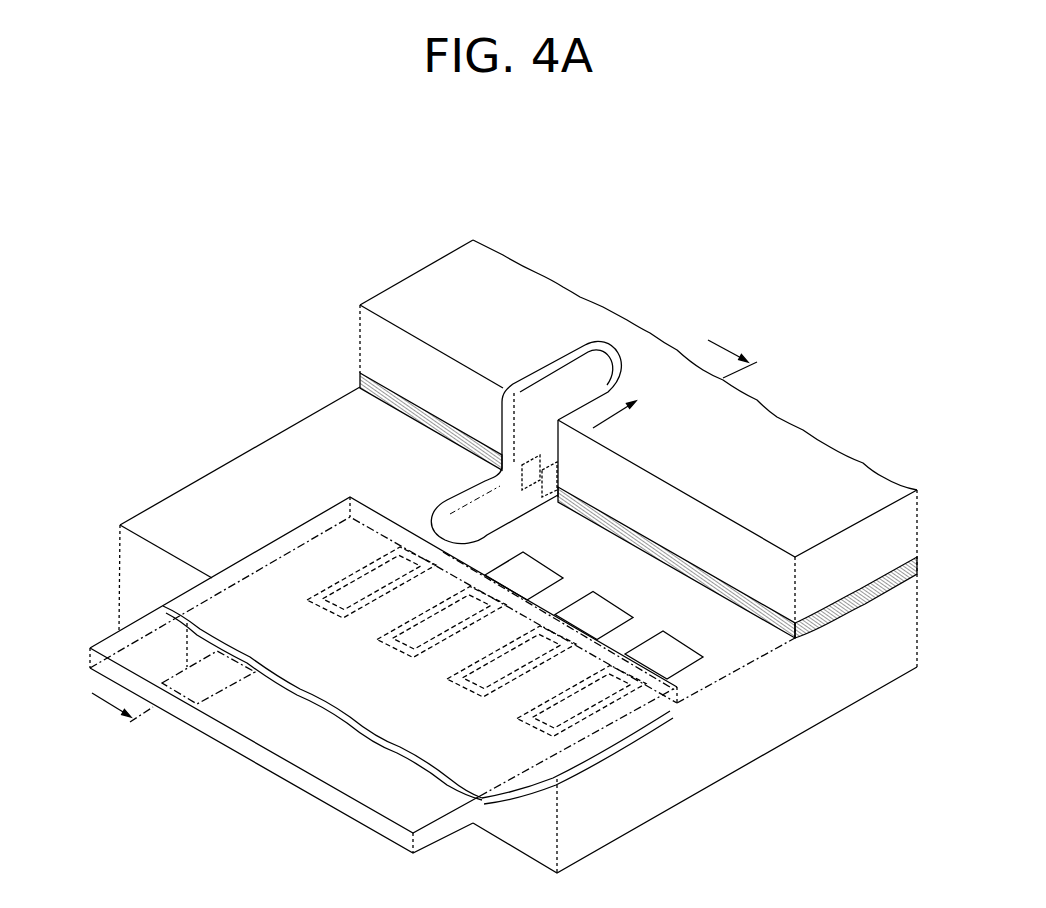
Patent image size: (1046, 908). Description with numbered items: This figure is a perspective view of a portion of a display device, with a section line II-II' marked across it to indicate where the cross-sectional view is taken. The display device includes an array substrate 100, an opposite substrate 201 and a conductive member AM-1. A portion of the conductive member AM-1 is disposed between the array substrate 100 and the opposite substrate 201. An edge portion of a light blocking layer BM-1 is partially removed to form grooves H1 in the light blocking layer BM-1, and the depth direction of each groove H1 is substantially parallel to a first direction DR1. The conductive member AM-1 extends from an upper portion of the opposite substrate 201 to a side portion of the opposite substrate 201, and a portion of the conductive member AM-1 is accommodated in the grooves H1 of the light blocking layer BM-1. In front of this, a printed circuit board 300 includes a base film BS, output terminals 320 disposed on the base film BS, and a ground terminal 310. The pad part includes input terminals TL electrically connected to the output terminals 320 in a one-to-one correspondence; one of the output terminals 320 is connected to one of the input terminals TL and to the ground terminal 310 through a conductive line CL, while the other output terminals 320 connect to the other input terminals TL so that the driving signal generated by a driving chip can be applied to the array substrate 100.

The array substrate 100 is at (690, 777).
The opposite substrate 201 is at (807, 443).
The printed circuit board 300 is at (250, 363).
The ground terminal 310 is at (117, 540).
The output terminals 320 is at (355, 580).
The base film BS is at (187, 623).
The conductive line CL is at (282, 633).
The input terminals TL is at (430, 533).
The conductive member AM-1 is at (602, 343).
The grooves H1 is at (563, 488).
The light blocking layer BM-1 is at (842, 607).
The first direction DR1 is at (620, 421).
The line II-II' II is at (112, 701).
The line II- II' is at (721, 348).